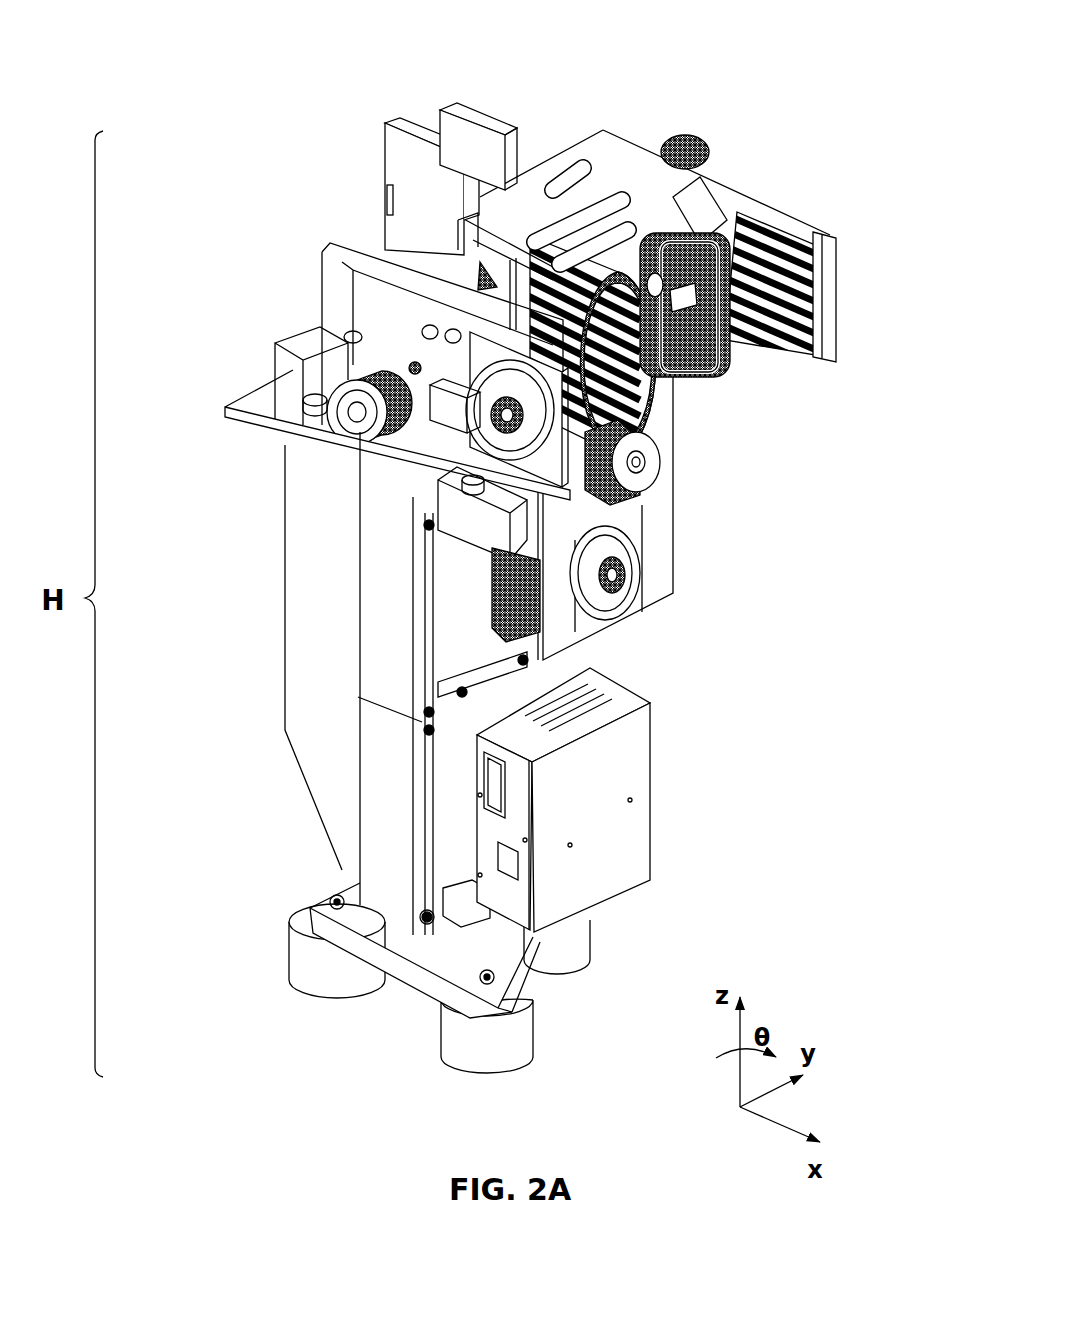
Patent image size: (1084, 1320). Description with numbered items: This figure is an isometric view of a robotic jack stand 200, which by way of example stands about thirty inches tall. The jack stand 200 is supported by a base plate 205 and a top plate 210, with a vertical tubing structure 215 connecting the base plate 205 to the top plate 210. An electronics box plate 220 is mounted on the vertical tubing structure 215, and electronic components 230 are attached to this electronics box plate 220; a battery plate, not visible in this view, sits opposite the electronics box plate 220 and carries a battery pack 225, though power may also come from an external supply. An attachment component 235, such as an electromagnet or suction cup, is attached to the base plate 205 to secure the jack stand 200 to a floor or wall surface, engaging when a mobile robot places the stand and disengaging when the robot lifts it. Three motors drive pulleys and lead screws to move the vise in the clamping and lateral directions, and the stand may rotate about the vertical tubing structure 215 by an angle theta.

The jack stand 200 is at (298, 95).
The base plate 205 is at (347, 938).
The top plate 210 is at (257, 436).
The vertical tubing structure 215 is at (444, 924).
The electronics box plate 220 is at (446, 599).
The battery pack 225 is at (330, 781).
The electronic components 230 is at (614, 678).
The attachment component 235 is at (512, 1043).